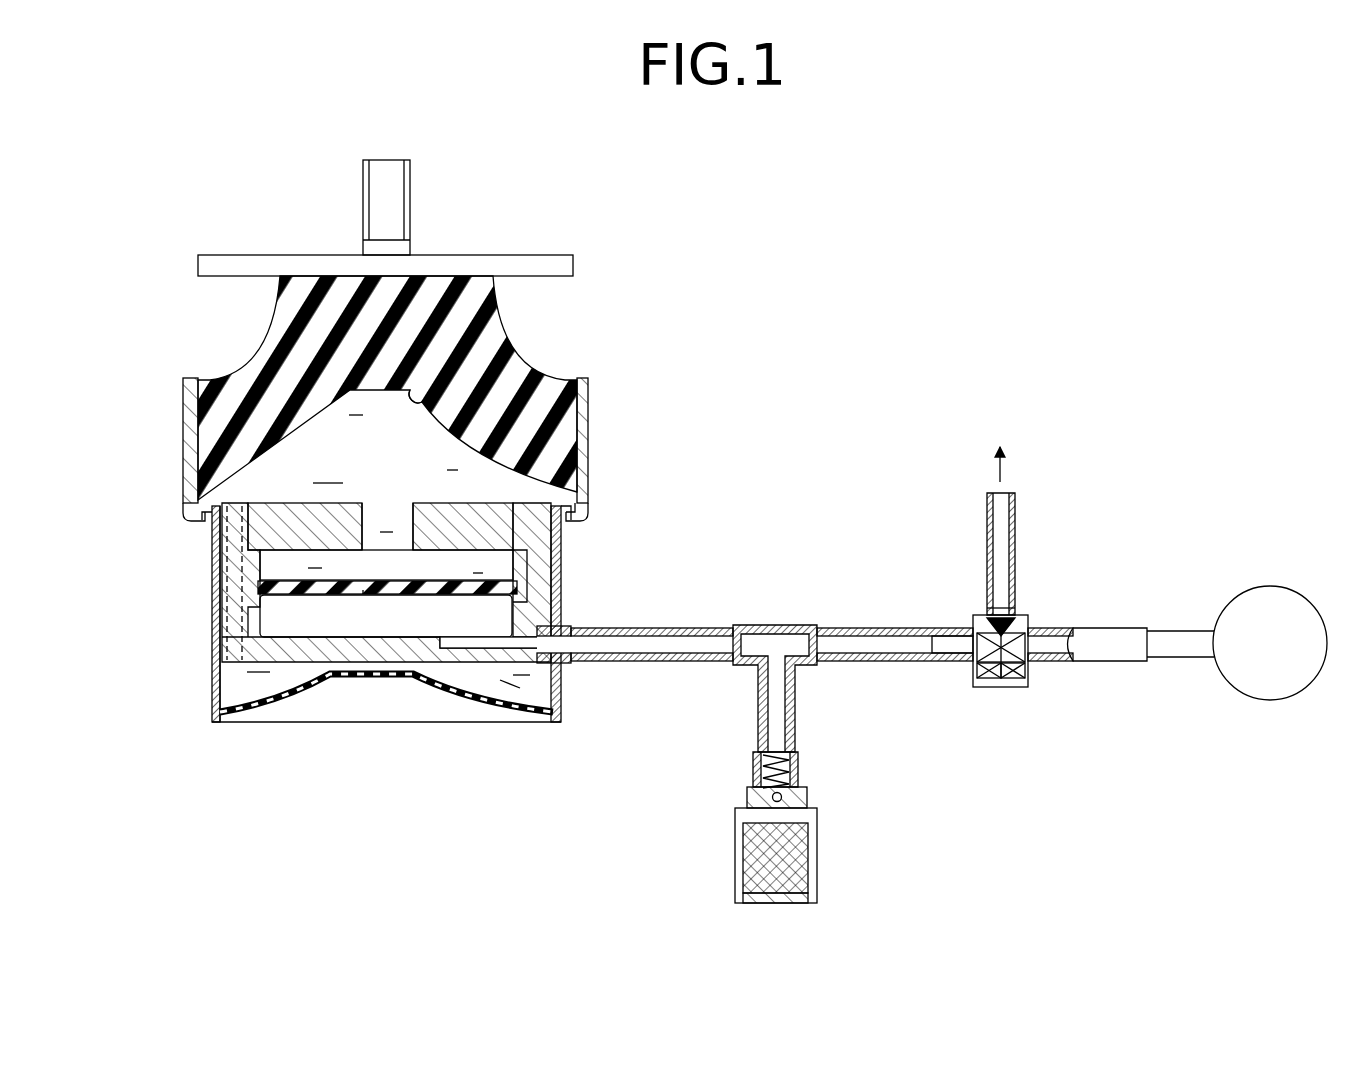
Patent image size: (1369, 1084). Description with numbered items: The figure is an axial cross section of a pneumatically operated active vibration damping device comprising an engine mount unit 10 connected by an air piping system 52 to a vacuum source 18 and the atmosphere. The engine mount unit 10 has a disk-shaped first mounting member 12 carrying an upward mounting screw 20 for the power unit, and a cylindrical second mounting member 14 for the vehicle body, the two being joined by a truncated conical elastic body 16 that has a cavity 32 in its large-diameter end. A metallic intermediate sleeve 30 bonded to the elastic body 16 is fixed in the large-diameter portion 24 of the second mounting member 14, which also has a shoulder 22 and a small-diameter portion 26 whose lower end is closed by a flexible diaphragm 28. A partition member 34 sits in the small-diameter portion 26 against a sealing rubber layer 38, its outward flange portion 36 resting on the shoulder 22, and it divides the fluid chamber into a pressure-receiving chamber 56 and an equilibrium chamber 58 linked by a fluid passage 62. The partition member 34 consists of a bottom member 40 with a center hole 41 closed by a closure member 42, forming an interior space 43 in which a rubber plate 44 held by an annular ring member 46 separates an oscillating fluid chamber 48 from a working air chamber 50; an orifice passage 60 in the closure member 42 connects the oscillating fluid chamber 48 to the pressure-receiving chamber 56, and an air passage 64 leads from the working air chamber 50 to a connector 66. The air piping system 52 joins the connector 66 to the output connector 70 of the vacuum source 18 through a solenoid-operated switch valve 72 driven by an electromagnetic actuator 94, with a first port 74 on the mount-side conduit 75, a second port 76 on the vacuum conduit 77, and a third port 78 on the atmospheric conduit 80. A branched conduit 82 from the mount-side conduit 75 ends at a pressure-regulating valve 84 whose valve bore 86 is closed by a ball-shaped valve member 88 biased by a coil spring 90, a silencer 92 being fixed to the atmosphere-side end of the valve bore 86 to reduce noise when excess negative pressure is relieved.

The engine mount unit 10 is at (218, 198).
The first mounting member 12 is at (477, 262).
The second mounting member 14 is at (181, 476).
The elastic body 16 is at (267, 368).
The vacuum source 18 is at (1245, 673).
The mounting screw 20 is at (400, 189).
The shoulder 22 is at (575, 517).
The large-diameter portion 24 is at (185, 428).
The small-diameter portion 26 is at (212, 680).
The flexible diaphragm 28 is at (270, 711).
The intermediate sleeve 30 is at (592, 430).
The cavity 32 is at (423, 400).
The partition member 34 is at (437, 491).
The outward flange portion 36 is at (205, 516).
The sealing rubber layer 38 is at (215, 572).
The bottom member 40 is at (340, 643).
The center hole 41 is at (592, 499).
The closure member 42 is at (308, 512).
The interior space 43 is at (502, 562).
The rubber plate 44 is at (363, 594).
The annular ring member 46 is at (520, 587).
The oscillating fluid chamber 48 is at (430, 577).
The working air chamber 50 is at (312, 625).
The air piping system 52 is at (880, 623).
The pressure-receiving chamber 56 is at (478, 484).
The equilibrium chamber 58 is at (520, 699).
The orifice passage 60 is at (377, 530).
The fluid passage 62 is at (228, 615).
The air passage 64 is at (452, 648).
The connector 66 is at (568, 628).
The output connector 70 is at (1172, 648).
The switch valve 72 is at (1031, 611).
The first port 74 is at (935, 661).
The mount-side conduit 75 is at (885, 628).
The second port 76 is at (1050, 662).
The vacuum conduit 77 is at (1093, 637).
The third port 78 is at (985, 603).
The atmospheric conduit 80 is at (1020, 515).
The branched conduit 82 is at (799, 697).
The pressure-regulating valve 84 is at (805, 769).
The valve bore 86 is at (760, 797).
The valve member 88 is at (808, 803).
The coil spring 90 is at (770, 768).
The silencer 92 is at (824, 870).
The electromagnetic actuator 94 is at (990, 680).